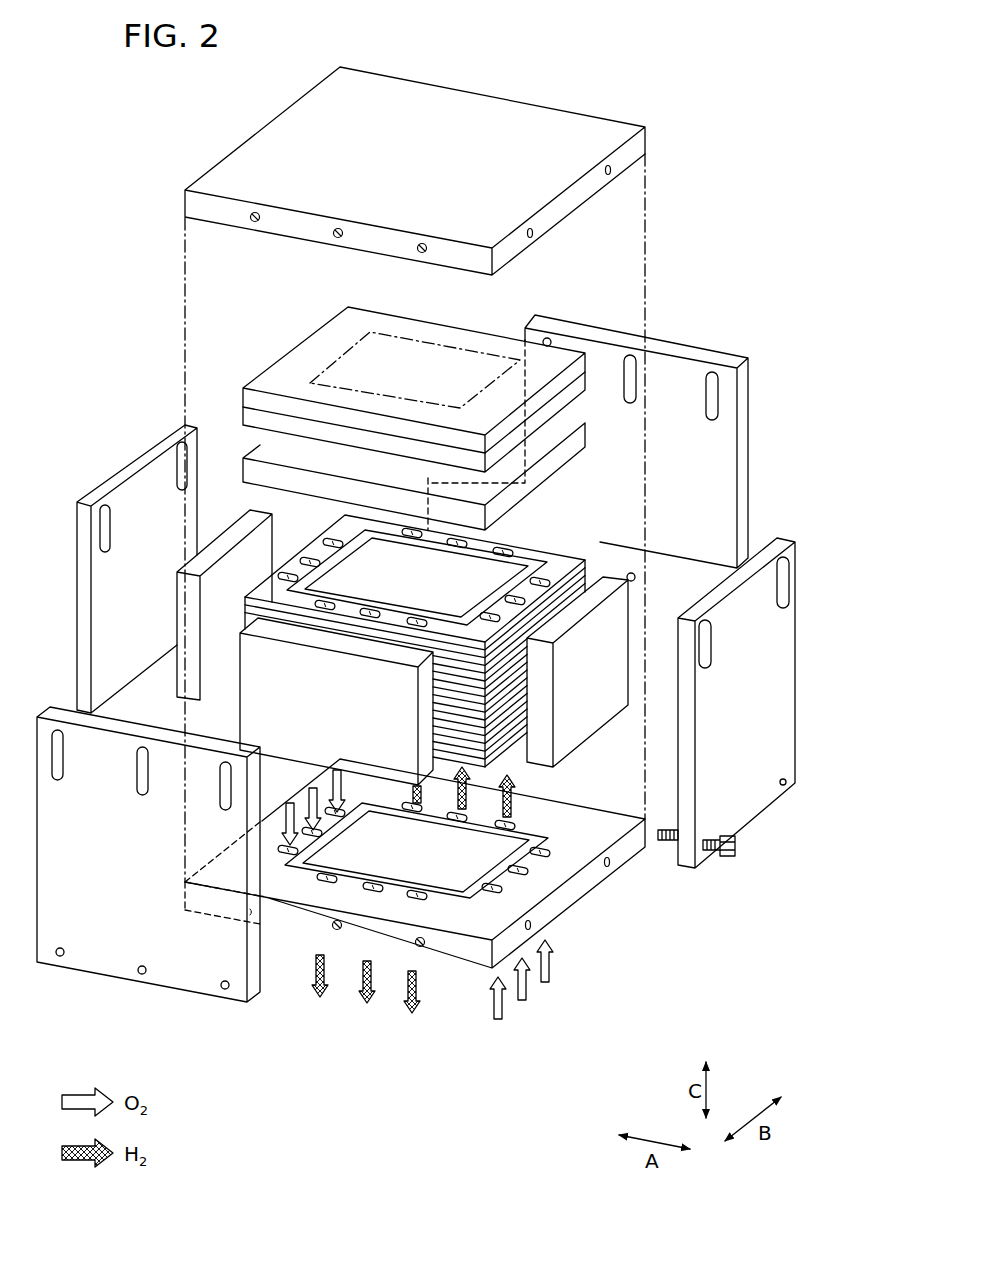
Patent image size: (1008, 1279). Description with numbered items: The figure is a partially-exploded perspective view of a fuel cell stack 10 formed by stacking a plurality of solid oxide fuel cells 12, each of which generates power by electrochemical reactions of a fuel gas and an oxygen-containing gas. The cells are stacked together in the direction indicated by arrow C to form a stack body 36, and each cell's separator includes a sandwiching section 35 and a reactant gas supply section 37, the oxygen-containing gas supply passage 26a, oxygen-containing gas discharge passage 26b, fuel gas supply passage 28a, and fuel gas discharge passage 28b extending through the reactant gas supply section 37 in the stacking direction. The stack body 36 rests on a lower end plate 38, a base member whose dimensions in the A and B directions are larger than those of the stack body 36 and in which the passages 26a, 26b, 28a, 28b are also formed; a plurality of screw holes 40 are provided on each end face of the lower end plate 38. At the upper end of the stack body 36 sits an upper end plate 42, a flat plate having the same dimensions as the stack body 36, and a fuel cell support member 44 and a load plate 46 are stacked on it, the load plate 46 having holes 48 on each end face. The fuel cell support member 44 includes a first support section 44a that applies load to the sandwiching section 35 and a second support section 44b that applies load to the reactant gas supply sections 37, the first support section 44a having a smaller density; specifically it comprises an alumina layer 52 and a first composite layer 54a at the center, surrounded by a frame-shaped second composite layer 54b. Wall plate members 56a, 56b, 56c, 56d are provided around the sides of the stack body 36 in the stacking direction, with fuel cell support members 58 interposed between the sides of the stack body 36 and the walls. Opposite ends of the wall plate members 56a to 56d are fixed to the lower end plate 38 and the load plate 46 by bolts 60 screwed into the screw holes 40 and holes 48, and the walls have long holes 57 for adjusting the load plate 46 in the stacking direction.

The fuel cell stack 10 is at (616, 86).
The solid oxide fuel cell 12 is at (415, 632).
The oxygen-containing gas supply passage 26a is at (521, 873).
The oxygen-containing gas discharge passage 26b is at (312, 834).
The fuel gas supply passage 28a is at (520, 824).
The fuel gas discharge passage 28b is at (423, 893).
The sandwiching section 35 is at (353, 578).
The stack body 36 is at (341, 526).
The reactant gas supply section 37 is at (548, 557).
The lower end plate 38 is at (589, 897).
The screw holes 40 is at (608, 865).
The upper end plate 42 is at (582, 440).
The fuel cell support member 44 is at (119, 349).
The first support section 44a is at (376, 342).
The second support section 44b is at (322, 342).
The load plate 46 is at (448, 101).
The holes 48 is at (422, 243).
The alumina layer 52 is at (250, 417).
The first composite layer 54a is at (470, 358).
The second composite layer 54b is at (413, 327).
The wall plate member 56a is at (786, 538).
The wall plate member 56b is at (170, 970).
The wall plate member 56c is at (120, 477).
The wall plate member 56d is at (700, 347).
The long holes 57 is at (628, 397).
The fuel cell support member 58 is at (605, 683).
The bolts 60 is at (730, 853).